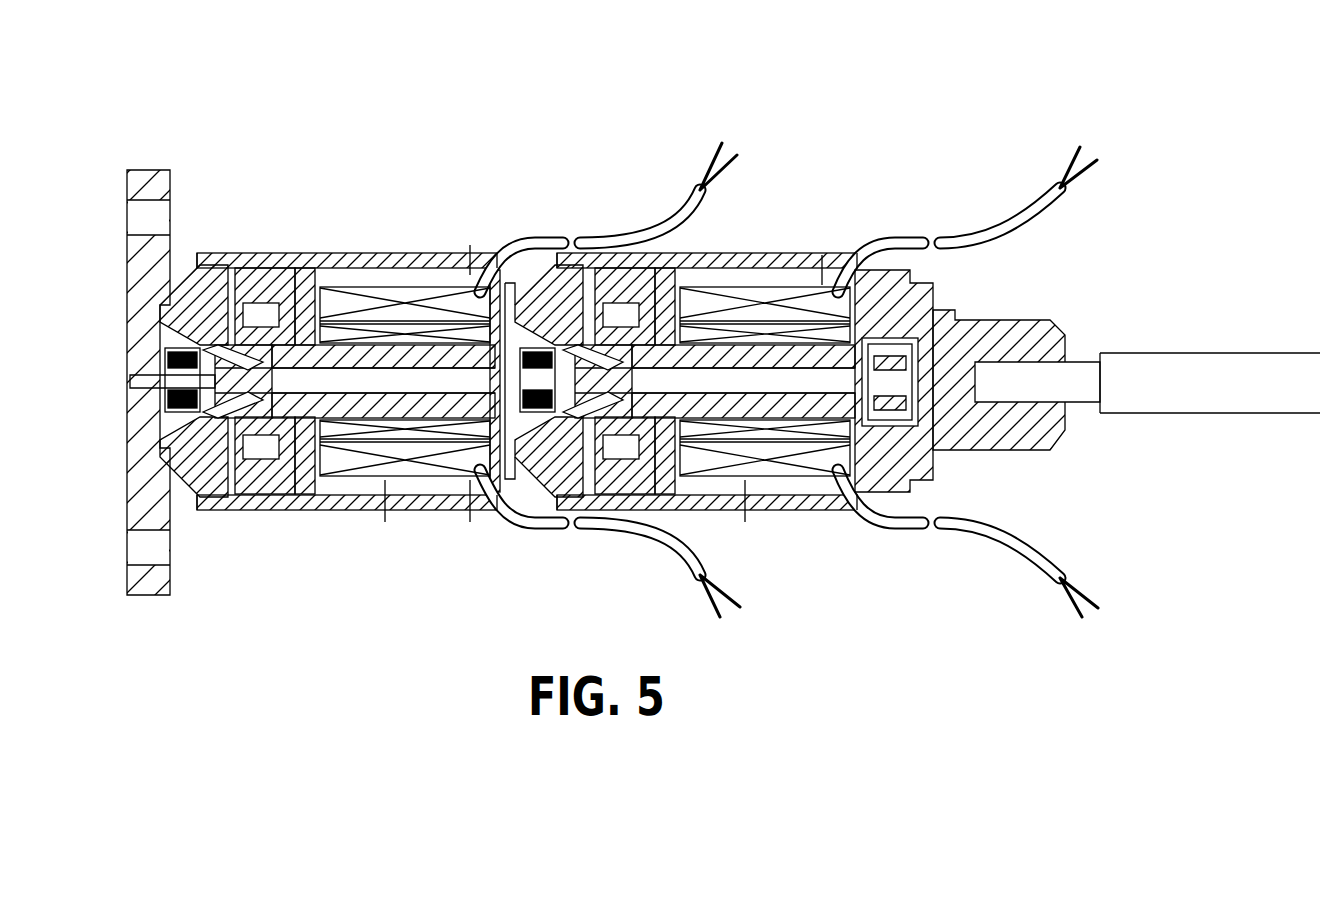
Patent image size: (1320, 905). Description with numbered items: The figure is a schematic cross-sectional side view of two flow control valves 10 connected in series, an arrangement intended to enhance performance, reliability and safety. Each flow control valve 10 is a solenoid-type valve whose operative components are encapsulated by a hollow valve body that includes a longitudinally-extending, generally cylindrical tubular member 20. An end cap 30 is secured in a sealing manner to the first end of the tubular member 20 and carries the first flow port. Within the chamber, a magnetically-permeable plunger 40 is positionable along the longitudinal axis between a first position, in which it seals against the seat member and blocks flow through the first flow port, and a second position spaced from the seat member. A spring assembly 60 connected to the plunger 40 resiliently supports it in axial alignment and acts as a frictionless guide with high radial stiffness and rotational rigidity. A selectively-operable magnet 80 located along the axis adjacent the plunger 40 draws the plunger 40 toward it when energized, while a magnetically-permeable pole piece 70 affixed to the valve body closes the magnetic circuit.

The flow control valve 10 is at (398, 88).
The tubular member 20 is at (334, 512).
The end cap 30 is at (193, 280).
The plunger 40 is at (183, 392).
The spring assembly 60 is at (238, 442).
The pole piece 70 is at (272, 252).
The selectively-operable magnet 80 is at (388, 290).